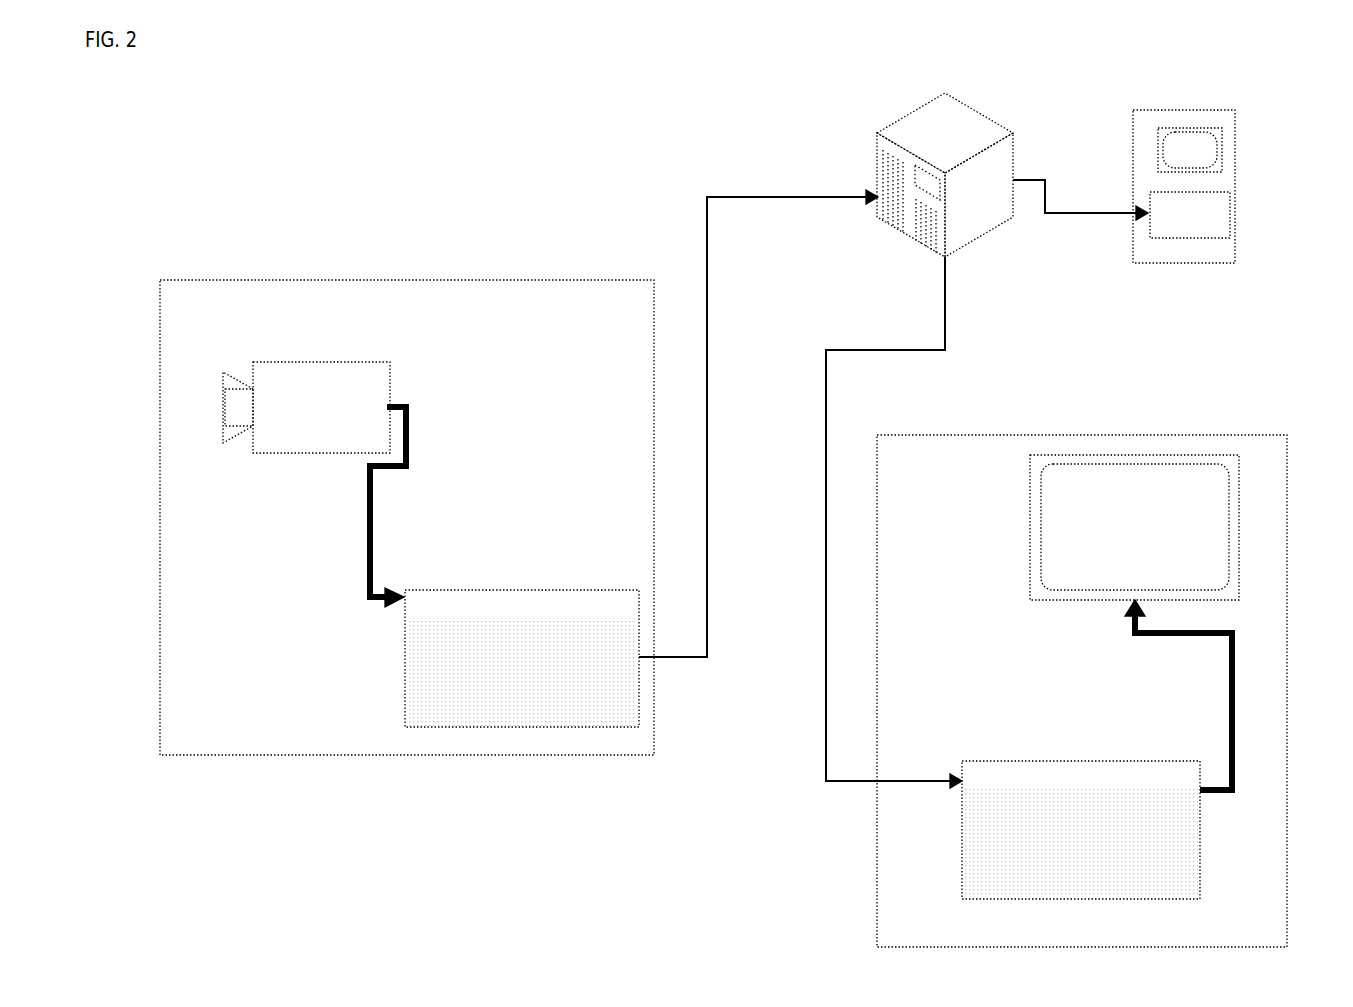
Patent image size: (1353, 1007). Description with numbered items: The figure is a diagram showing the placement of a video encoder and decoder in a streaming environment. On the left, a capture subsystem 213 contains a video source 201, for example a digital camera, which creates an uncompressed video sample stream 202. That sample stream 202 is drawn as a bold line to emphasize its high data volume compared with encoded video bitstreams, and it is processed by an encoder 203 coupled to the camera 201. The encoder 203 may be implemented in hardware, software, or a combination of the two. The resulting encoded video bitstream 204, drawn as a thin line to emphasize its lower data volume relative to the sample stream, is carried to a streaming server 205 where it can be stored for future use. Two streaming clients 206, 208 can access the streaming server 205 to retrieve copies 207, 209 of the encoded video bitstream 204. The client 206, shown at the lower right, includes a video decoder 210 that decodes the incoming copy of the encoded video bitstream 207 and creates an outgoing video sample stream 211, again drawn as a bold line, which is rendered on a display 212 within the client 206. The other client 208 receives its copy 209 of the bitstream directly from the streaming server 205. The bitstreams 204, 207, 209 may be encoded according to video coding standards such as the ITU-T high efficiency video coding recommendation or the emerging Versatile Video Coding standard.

The video source 201 is at (322, 363).
The uncompressed video sample stream 202 is at (370, 541).
The encoder 203 is at (532, 590).
The encoded video bitstream 204 is at (706, 230).
The streaming server 205 is at (880, 160).
The streaming client 206 is at (877, 932).
The copy of the encoded video bitstream 207 is at (826, 584).
The streaming client 208 is at (1235, 158).
The copy of the encoded video bitstream 209 is at (1062, 214).
The video decoder 210 is at (962, 873).
The outgoing video sample stream 211 is at (1230, 694).
The display 212 is at (1031, 527).
The capture subsystem 213 is at (317, 755).